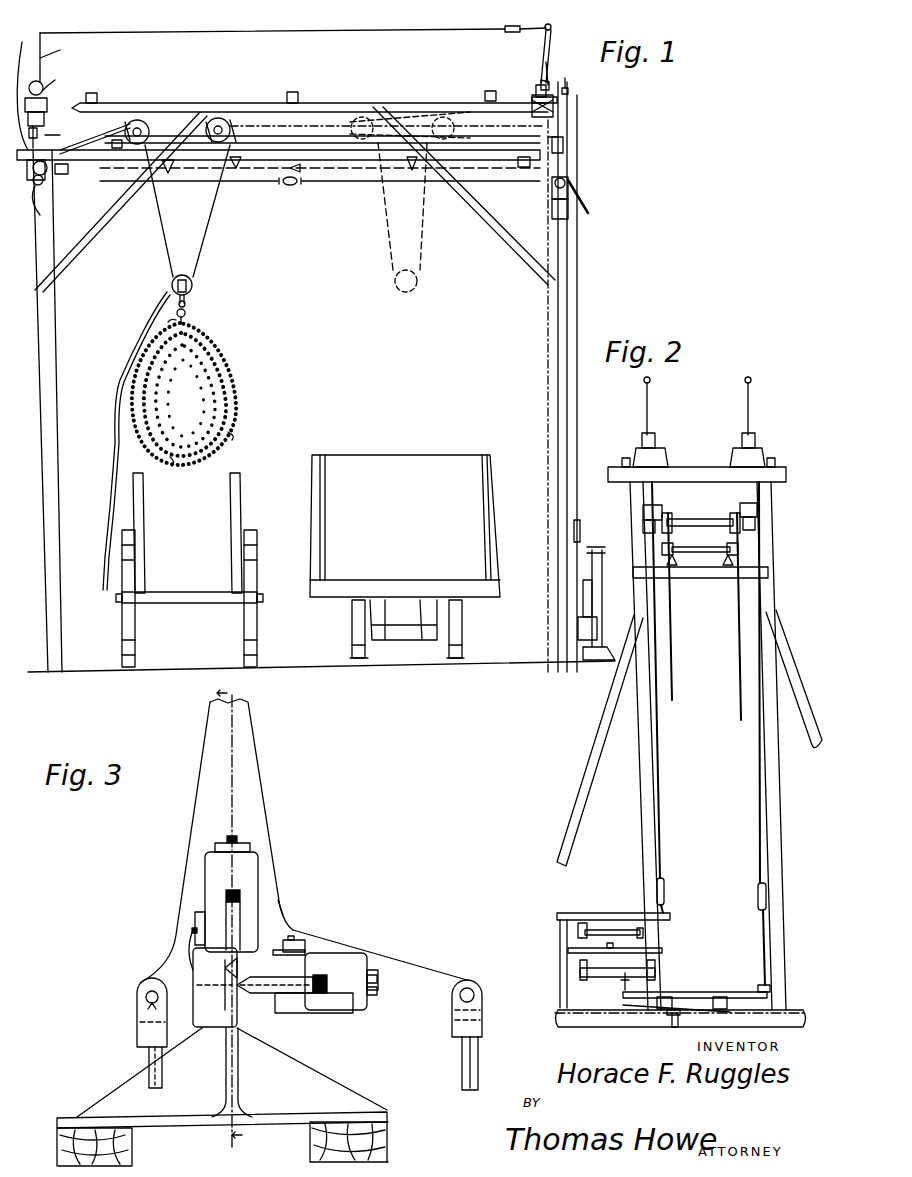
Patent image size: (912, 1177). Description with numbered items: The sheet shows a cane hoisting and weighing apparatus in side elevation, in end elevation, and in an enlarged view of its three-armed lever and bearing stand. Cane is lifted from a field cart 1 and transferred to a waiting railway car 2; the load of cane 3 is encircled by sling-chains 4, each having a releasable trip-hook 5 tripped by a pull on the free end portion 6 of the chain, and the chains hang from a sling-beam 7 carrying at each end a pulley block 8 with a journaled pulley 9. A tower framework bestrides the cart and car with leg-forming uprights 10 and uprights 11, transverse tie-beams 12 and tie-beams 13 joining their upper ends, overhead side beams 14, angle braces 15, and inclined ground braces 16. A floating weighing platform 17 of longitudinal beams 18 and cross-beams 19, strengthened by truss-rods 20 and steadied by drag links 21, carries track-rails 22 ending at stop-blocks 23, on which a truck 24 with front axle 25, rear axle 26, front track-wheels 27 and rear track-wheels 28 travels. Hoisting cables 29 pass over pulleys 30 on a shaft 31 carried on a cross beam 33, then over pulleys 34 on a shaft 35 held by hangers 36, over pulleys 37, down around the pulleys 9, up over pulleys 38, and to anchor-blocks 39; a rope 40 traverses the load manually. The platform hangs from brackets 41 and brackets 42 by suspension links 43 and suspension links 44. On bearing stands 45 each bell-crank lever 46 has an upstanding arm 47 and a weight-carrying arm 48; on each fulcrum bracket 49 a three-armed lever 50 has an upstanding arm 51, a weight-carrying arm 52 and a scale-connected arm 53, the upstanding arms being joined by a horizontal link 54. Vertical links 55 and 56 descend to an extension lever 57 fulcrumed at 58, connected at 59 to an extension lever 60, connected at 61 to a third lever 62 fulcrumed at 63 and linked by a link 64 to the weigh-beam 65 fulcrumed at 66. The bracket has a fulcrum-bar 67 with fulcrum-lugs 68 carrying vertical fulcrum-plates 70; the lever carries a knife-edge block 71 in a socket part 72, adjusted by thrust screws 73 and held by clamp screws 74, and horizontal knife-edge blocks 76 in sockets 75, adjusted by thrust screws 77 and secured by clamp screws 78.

In FIG. 1, the field cart 1 is at (235, 490).
In FIG. 1, the railway car 2 is at (398, 452).
In FIG. 1, the load of cane 3 is at (227, 412).
In FIG. 1, the sling-chains 4 is at (230, 430).
In FIG. 1, the trip-hook 5 is at (170, 457).
In FIG. 1, the free end portion of the chain 6 is at (173, 321).
In FIG. 3, the free end portion of the chain 6 is at (237, 919).
In FIG. 1, the sling-beam 7 is at (187, 315).
In FIG. 1, the pulley block 8 is at (185, 302).
In FIG. 1, the pulley 9 is at (187, 288).
In FIG. 1, the leg-forming uprights 10 is at (552, 373).
In FIG. 2, the leg-forming uprights 10 is at (647, 792).
In FIG. 1, the leg-forming uprights 11 is at (43, 363).
In FIG. 1, the transverse tie-beams 12 is at (532, 95).
In FIG. 2, the transverse tie-beams 12 is at (775, 475).
In FIG. 3, the transverse tie-beams 12 is at (133, 1152).
In FIG. 1, the tie-beams 13 is at (58, 128).
In FIG. 1, the overhead side beams 14 is at (340, 100).
In FIG. 2, the overhead side beams 14 is at (620, 460).
In FIG. 1, the angle braces 15 is at (80, 243).
In FIG. 2, the inclined ground braces 16 is at (602, 745).
In FIG. 1, the weighing platform 17 is at (230, 153).
In FIG. 1, the longitudinal beams 18 is at (342, 163).
In FIG. 1, the cross-beams 19 is at (60, 170).
In FIG. 1, the truss-rods 20 is at (333, 173).
In FIG. 1, the drag links 21 is at (207, 160).
In FIG. 1, the track-rails 22 is at (247, 178).
In FIG. 1, the stop-blocks 23 is at (107, 147).
In FIG. 1, the truck 24 is at (160, 121).
In FIG. 1, the front axle 25 is at (222, 122).
In FIG. 1, the rear axle 26 is at (133, 120).
In FIG. 1, the front track-wheels 27 is at (233, 120).
In FIG. 1, the rear track-wheels 28 is at (146, 123).
In FIG. 1, the hoisting cables 29 is at (213, 160).
In FIG. 2, the hoisting cables 29 is at (740, 687).
In FIG. 1, the pulleys 30 is at (567, 173).
In FIG. 2, the pulleys 30 is at (670, 550).
In FIG. 1, the shaft 31 is at (567, 183).
In FIG. 2, the shaft 31 is at (680, 553).
In FIG. 1, the cross beam 33 is at (563, 233).
In FIG. 2, the cross beam 33 is at (682, 578).
In FIG. 1, the pulleys 34 is at (43, 173).
In FIG. 2, the pulleys 34 is at (668, 522).
In FIG. 1, the shaft 35 is at (42, 180).
In FIG. 2, the shaft 35 is at (712, 520).
In FIG. 1, the hangers 36 is at (40, 187).
In FIG. 1, the pulleys 37 is at (128, 125).
In FIG. 1, the pulleys 38 is at (220, 125).
In FIG. 1, the anchor-blocks 39 is at (515, 117).
In FIG. 1, the rope 40 is at (110, 452).
In FIG. 1, the brackets 41 is at (25, 136).
In FIG. 1, the brackets 42 is at (567, 148).
In FIG. 1, the suspension links 43 is at (28, 88).
In FIG. 1, the suspension links 44 is at (560, 137).
In FIG. 3, the suspension links 44 is at (148, 1057).
In FIG. 1, the bearing stands 45 is at (50, 87).
In FIG. 1, the bell-crank lever 46 is at (45, 55).
In FIG. 1, the upstanding arm 47 is at (43, 57).
In FIG. 1, the weight-carrying arm 48 is at (40, 90).
In FIG. 1, the fulcrum bracket 49 is at (567, 98).
In FIG. 2, the fulcrum bracket 49 is at (662, 462).
In FIG. 3, the fulcrum bracket 49 is at (283, 1060).
In FIG. 1, the three-armed lever 50 is at (547, 63).
In FIG. 2, the three-armed lever 50 is at (650, 412).
In FIG. 3, the three-armed lever 50 is at (270, 905).
In FIG. 1, the upstanding arm 51 is at (557, 43).
In FIG. 3, the upstanding arm 51 is at (270, 783).
In FIG. 1, the weight-carrying arm 52 is at (543, 78).
In FIG. 3, the weight-carrying arm 52 is at (133, 985).
In FIG. 1, the scale-connected arm 53 is at (567, 77).
In FIG. 3, the scale-connected arm 53 is at (405, 970).
In FIG. 1, the horizontal link 54 is at (258, 26).
In FIG. 1, the vertical link 55 is at (573, 302).
In FIG. 2, the vertical link 55 is at (660, 760).
In FIG. 3, the vertical link 55 is at (467, 1050).
In FIG. 2, the vertical link 56 is at (760, 837).
In FIG. 2, the extension lever 57 is at (690, 1008).
In FIG. 2, the fulcrum 58 is at (677, 1020).
In FIG. 2, the connection 59 is at (725, 990).
In FIG. 2, the extension lever 60 is at (637, 1005).
In FIG. 2, the connection 61 is at (628, 980).
In FIG. 2, the third lever 62 is at (607, 972).
In FIG. 2, the fulcrum 63 is at (650, 972).
In FIG. 2, the link 64 is at (582, 938).
In FIG. 2, the weigh-beam 65 is at (622, 895).
In FIG. 2, the fulcrum 66 is at (582, 927).
In FIG. 3, the fulcrum-bar 67 is at (270, 993).
In FIG. 3, the fulcrum-lug 68 is at (183, 978).
In FIG. 3, the fulcrum-plate 70 is at (203, 997).
In FIG. 3, the knife-edge block 71 is at (226, 917).
In FIG. 3, the socket part 72 is at (226, 897).
In FIG. 3, the thrust screws 73 is at (227, 840).
In FIG. 3, the clamp screws 74 is at (193, 932).
In FIG. 3, the sockets 75 is at (345, 1007).
In FIG. 3, the knife-edge block 76 is at (300, 977).
In FIG. 3, the thrust screw 77 is at (378, 983).
In FIG. 3, the clamp screws 78 is at (292, 940).